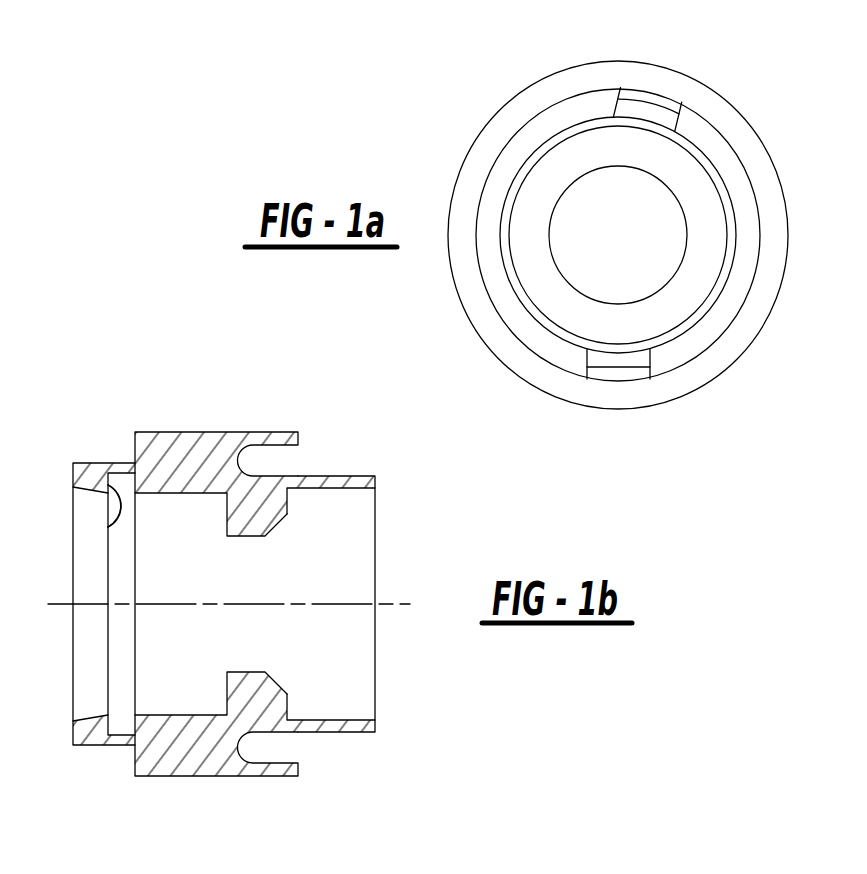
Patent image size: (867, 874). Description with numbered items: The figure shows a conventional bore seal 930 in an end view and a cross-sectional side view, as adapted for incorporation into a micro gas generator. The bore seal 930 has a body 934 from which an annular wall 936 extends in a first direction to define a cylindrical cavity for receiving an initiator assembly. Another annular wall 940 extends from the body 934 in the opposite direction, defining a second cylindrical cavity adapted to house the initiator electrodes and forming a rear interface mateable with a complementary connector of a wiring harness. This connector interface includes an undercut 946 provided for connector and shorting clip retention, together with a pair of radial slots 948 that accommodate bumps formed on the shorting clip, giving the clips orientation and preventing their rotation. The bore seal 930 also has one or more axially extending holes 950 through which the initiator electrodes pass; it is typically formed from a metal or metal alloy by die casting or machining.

In FIG. 1A, the bore seal 930 is at (494, 93).
In FIG. 1B, the bore seal 930 is at (266, 370).
In FIG. 1B, the body 934 is at (175, 777).
In FIG. 1B, the annular wall 936 is at (331, 475).
In FIG. 1B, the annular wall 940 is at (105, 748).
In FIG. 1B, the undercut 946 is at (108, 527).
In FIG. 1A, the radial slots 948 is at (643, 113).
In FIG. 1B, the axially extending holes 950 is at (348, 864).